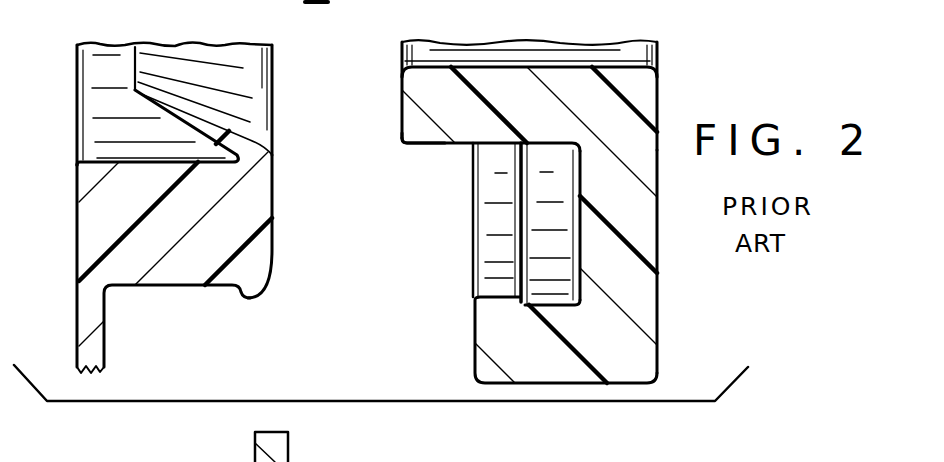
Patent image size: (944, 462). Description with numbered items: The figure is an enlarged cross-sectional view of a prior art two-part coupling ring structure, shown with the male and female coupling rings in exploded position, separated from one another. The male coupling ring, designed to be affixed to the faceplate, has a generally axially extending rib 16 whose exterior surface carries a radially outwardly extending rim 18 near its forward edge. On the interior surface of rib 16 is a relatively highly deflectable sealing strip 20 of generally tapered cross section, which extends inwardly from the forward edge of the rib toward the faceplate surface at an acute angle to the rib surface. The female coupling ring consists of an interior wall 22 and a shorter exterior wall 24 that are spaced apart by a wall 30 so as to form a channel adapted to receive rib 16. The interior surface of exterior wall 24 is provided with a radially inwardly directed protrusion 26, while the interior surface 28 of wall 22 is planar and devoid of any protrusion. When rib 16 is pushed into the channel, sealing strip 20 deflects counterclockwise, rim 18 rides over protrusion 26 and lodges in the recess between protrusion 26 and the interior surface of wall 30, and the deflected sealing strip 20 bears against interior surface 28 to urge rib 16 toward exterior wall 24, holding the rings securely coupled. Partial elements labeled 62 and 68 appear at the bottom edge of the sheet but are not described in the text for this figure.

The rib 16 is at (110, 219).
The rim 18 is at (247, 284).
The sealing strip 20 is at (192, 120).
The interior wall 22 is at (538, 100).
The exterior wall 24 is at (600, 333).
The protrusion 26 is at (500, 295).
The interior surface 28 is at (442, 143).
The wall 30 is at (615, 205).
The partial element 62 is at (255, 440).
The partial element 68 is at (317, 461).